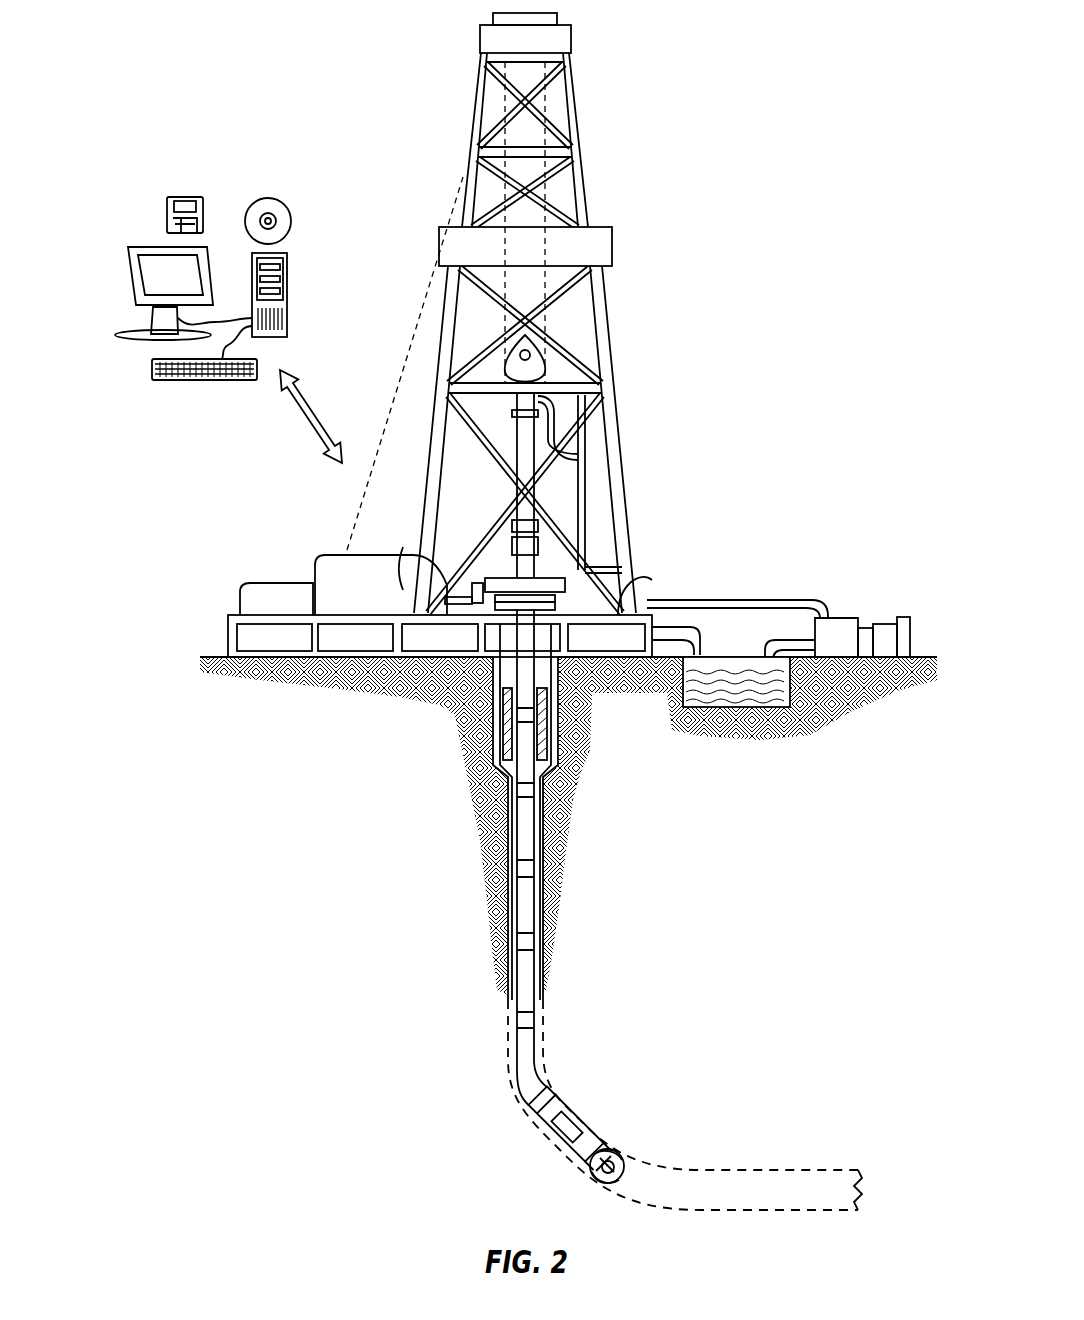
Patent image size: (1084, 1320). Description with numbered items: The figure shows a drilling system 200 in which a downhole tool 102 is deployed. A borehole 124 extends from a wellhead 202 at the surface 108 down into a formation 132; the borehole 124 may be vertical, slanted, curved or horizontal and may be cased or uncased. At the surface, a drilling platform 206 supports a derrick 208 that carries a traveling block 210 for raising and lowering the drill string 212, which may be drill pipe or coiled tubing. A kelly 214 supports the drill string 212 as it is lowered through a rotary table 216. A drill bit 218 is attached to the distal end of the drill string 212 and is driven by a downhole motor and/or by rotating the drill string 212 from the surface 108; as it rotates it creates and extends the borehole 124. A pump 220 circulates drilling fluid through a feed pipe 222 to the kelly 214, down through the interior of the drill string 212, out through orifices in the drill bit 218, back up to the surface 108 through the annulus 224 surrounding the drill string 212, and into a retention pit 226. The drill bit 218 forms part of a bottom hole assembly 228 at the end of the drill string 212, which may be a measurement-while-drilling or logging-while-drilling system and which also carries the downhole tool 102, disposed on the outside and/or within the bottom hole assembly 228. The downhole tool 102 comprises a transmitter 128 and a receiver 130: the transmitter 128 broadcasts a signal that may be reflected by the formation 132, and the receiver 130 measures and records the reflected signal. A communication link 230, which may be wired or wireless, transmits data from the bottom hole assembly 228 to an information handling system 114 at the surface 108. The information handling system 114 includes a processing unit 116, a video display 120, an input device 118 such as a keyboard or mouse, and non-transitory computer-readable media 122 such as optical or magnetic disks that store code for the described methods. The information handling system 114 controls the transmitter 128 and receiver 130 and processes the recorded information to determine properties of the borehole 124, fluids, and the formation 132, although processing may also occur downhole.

The drilling system 200 is at (842, 122).
The information handling system 114 is at (133, 184).
The non-transitory computer-readable media 122 is at (262, 196).
The video display 120 is at (133, 283).
The processing unit 116 is at (292, 259).
The input device 118 is at (165, 385).
The communication link 230 is at (300, 424).
The derrick 208 is at (585, 167).
The traveling block 210 is at (550, 357).
The kelly 214 is at (525, 440).
The rotary table 216 is at (563, 576).
The wellhead 202 is at (567, 603).
The drilling platform 206 is at (228, 637).
The feed pipe 222 is at (763, 598).
The pump 220 is at (845, 617).
The surface 108 is at (923, 657).
The formation 132 is at (772, 955).
The retention pit 226 is at (730, 692).
The annulus 224 is at (505, 862).
The borehole 124 is at (545, 862).
The drill string 212 is at (535, 843).
The transmitter 128 is at (558, 1104).
The downhole tool 102 is at (577, 1118).
The receiver 130 is at (563, 1157).
The drill bit 218 is at (623, 1153).
The bottom hole assembly 228 is at (535, 1123).